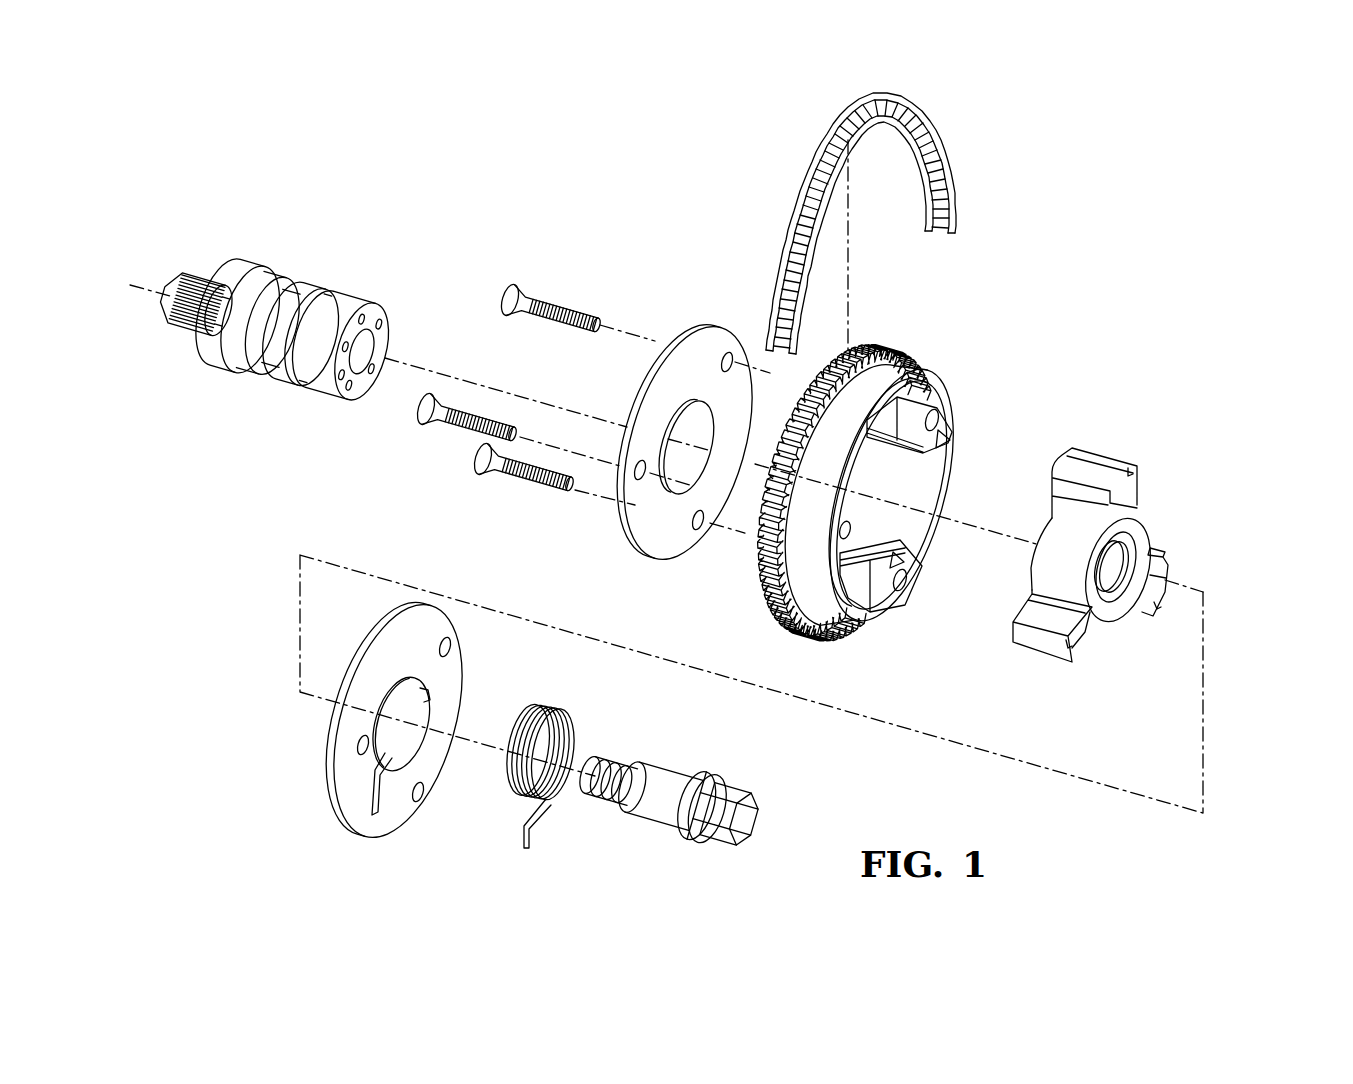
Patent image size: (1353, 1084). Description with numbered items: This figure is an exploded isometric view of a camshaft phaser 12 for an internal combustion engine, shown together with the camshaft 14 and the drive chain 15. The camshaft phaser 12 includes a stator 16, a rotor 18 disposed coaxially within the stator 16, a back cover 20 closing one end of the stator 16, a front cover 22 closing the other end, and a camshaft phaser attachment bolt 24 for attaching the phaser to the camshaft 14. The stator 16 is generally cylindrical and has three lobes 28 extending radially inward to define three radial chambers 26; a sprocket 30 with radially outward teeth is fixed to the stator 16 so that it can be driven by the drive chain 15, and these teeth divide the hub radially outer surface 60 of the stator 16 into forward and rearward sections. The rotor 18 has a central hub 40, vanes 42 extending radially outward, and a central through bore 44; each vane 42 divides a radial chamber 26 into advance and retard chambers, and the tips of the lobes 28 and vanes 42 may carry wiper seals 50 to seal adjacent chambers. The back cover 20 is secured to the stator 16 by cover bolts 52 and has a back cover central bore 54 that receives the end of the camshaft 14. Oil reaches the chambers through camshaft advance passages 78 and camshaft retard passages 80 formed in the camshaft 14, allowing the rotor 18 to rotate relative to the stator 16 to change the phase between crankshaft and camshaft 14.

The camshaft phaser 12 is at (1062, 218).
The camshaft 14 is at (222, 340).
The drive chain 15 is at (938, 173).
The stator 16 is at (820, 466).
The rotor 18 is at (1139, 549).
The back cover 20 is at (623, 517).
The front cover 22 is at (400, 797).
The camshaft phaser attachment bolt 24 is at (732, 812).
The radial chambers 26 is at (927, 497).
The lobes 28 is at (943, 443).
The sprocket 30 is at (794, 489).
The central hub 40 is at (1057, 530).
The vanes 42 is at (1073, 452).
The central through bore 44 is at (1113, 562).
The wiper seals 50 is at (927, 445).
The cover bolts 52 is at (537, 292).
The back cover central bore 54 is at (700, 427).
The hub radially outer surface 60 is at (757, 548).
The camshaft advance passages 78 is at (372, 345).
The camshaft retard passages 80 is at (358, 328).